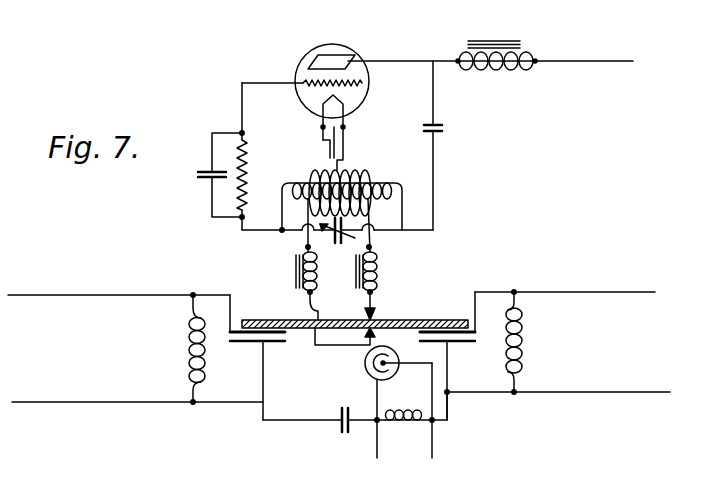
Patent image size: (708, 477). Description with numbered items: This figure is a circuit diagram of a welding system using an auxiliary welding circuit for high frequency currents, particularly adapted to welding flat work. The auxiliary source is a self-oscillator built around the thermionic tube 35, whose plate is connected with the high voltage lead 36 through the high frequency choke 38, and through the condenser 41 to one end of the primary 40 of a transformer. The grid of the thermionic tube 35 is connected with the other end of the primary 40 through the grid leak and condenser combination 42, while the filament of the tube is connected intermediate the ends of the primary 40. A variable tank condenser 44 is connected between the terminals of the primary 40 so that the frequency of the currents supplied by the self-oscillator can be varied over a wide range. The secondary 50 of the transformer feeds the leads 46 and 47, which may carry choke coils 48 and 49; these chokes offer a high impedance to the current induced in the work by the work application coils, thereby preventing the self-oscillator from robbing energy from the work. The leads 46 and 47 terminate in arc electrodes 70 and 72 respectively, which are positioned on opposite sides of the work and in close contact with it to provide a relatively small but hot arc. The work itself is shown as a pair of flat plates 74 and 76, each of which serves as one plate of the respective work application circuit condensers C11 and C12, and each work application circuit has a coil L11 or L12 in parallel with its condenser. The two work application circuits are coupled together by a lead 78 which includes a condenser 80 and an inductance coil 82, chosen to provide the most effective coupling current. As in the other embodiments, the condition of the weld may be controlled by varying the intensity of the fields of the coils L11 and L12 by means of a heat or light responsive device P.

The thermionic tube 35 is at (302, 64).
The high voltage lead 36 is at (567, 59).
The high frequency choke 38 is at (503, 42).
The primary of transformer 40 is at (392, 183).
The condenser 41 is at (441, 124).
The grid leak and condenser combination 42 is at (222, 150).
The variable tank condenser 44 is at (338, 243).
The lead 46 is at (376, 300).
The lead 47 is at (319, 314).
The choke coil 48 is at (380, 266).
The choke coil 49 is at (296, 258).
The secondary of transformer 50 is at (350, 182).
The arc electrode 70 is at (375, 317).
The arc electrode 72 is at (360, 340).
The flat plate 74 is at (441, 320).
The flat plate 76 is at (262, 306).
The lead 78 is at (449, 411).
The condenser 80 is at (335, 432).
The inductance coil 82 is at (411, 432).
The heat or light responsive device P is at (368, 369).
The coil L12 is at (135, 348).
The condenser C12 is at (250, 347).
The coil L11 is at (557, 342).
The condenser C11 is at (470, 344).